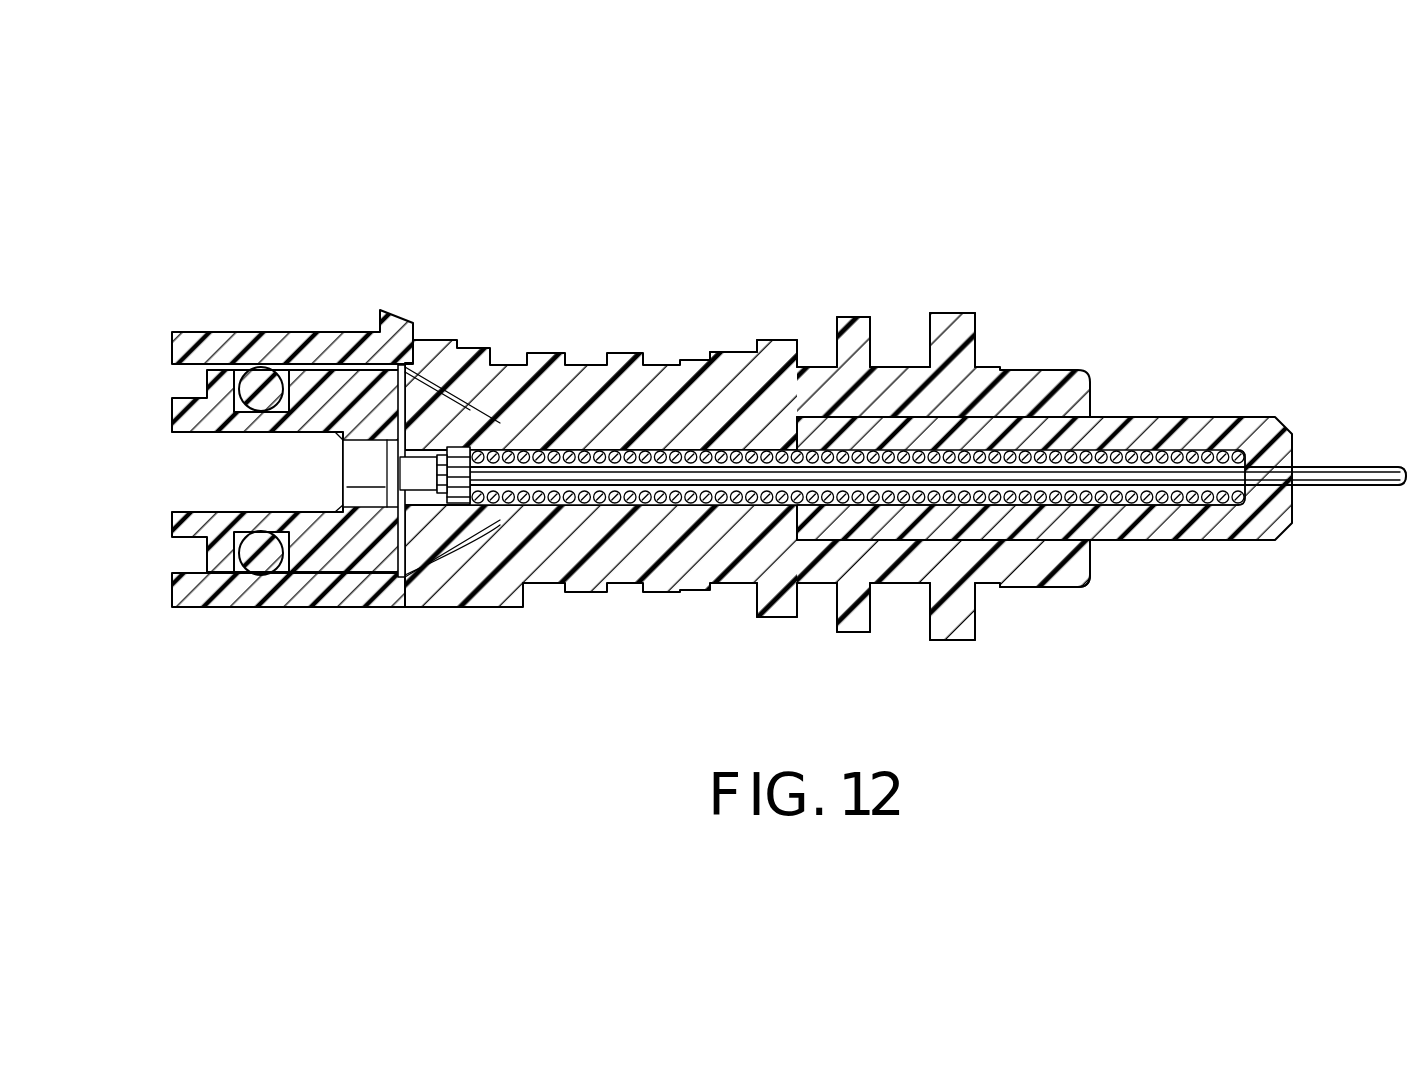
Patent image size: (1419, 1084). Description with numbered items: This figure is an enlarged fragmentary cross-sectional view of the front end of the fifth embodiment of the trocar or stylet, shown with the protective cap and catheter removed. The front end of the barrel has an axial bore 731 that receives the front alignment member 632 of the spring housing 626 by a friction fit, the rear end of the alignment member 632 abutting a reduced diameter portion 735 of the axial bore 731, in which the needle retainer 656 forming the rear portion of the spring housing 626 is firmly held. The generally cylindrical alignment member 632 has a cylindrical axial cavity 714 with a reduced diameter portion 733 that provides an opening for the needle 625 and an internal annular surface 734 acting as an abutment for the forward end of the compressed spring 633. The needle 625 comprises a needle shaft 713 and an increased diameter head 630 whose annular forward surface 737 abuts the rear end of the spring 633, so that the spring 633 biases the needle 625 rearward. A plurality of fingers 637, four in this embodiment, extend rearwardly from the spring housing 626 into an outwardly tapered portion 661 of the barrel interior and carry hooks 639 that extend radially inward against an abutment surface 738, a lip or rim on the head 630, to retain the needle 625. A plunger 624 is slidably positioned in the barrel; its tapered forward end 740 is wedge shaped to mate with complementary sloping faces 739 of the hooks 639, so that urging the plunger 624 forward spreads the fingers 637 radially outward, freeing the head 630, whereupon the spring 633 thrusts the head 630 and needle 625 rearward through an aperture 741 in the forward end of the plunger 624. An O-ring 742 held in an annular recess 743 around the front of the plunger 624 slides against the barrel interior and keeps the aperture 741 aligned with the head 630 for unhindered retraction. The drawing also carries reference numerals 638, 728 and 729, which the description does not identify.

The plunger 624 is at (172, 348).
The needle 625 is at (1327, 445).
The spring housing 626 is at (1162, 558).
The needle head 630 is at (477, 445).
The front alignment member 632 is at (1157, 432).
The compressed spring 633 is at (1220, 500).
The fingers 637 is at (426, 405).
The bore opening 638 is at (195, 472).
The hooks 639 is at (392, 545).
The needle retainer 656 is at (760, 600).
The outwardly tapered portion 661 is at (462, 545).
The needle shaft 713 is at (1347, 467).
The cylindrical axial cavity 714 is at (1133, 475).
The body 728 is at (665, 325).
The flanges 729 is at (950, 318).
The axial bore 731 is at (1060, 518).
The reduced diameter portion 733 is at (1306, 500).
The internal annular surface 734 is at (1235, 455).
The reduced diameter portion of the axial bore 735 is at (742, 425).
The annular forward surface 737 is at (495, 525).
The abutment surface 738 is at (438, 445).
The wedge shaped surfaces 739 is at (398, 530).
The forward end of the plunger 740 is at (355, 340).
The aperture 741 is at (371, 473).
The O-ring 742 is at (265, 575).
The annular recess 743 is at (222, 578).